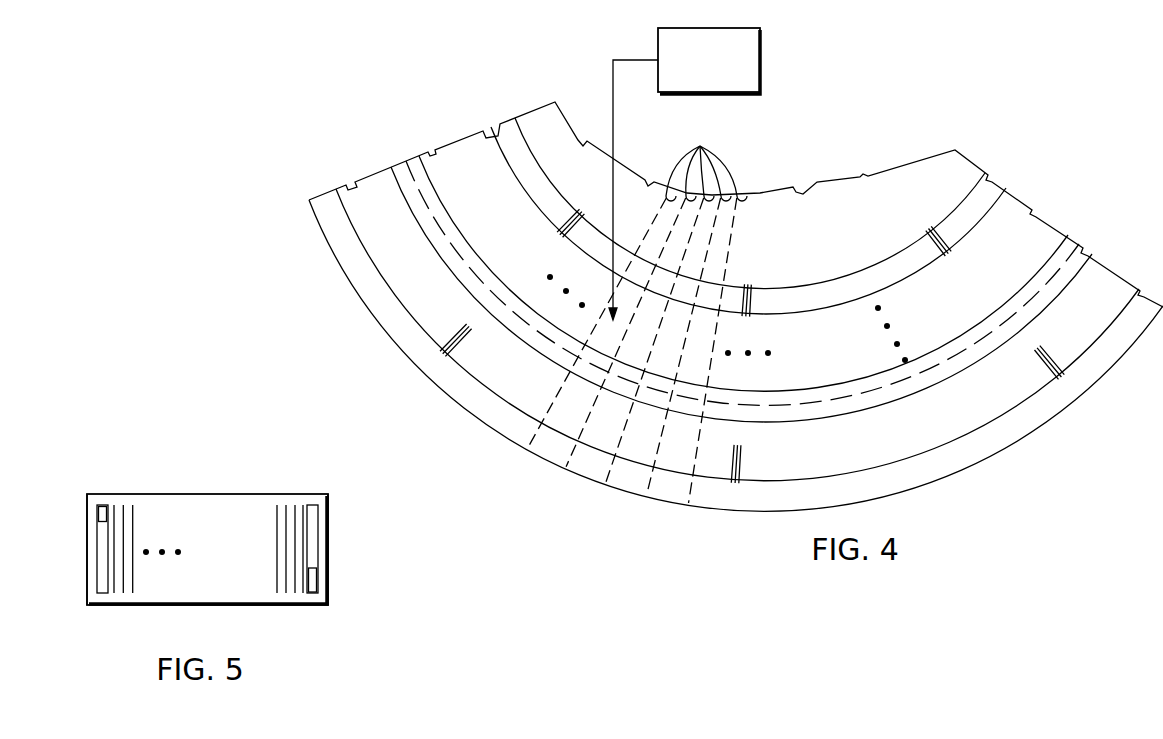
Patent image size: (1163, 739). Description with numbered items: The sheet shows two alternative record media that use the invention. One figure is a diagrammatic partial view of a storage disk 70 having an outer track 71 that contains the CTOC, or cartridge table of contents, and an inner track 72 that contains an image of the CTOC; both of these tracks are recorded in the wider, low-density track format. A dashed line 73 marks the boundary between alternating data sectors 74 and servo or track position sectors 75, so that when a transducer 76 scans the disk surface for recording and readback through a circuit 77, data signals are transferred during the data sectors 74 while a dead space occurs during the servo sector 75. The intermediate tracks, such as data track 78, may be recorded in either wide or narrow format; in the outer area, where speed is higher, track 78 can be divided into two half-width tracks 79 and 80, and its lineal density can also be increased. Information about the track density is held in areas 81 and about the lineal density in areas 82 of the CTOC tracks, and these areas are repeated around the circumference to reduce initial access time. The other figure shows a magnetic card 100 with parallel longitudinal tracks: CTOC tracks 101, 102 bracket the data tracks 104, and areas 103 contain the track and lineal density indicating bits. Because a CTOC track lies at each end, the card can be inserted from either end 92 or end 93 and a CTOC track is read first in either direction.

In FIG. 4, the storage disk 70 is at (745, 508).
In FIG. 4, the outer track 71 is at (945, 446).
In FIG. 4, the inner track 72 is at (851, 296).
In FIG. 4, the dashed line 73 is at (706, 158).
In FIG. 4, the data sectors 74 is at (548, 452).
In FIG. 4, the servo or track position sector 75 is at (587, 472).
In FIG. 4, the transducer 76 is at (610, 314).
In FIG. 4, the circuit 77 is at (760, 53).
In FIG. 4, the track 78 is at (843, 384).
In FIG. 4, the half width track 79 is at (959, 347).
In FIG. 4, the half width track 80 is at (1002, 340).
In FIG. 4, the areas 81 is at (578, 216).
In FIG. 4, the areas 82 is at (576, 234).
In FIG. 5, the magnetic card 100 is at (185, 494).
In FIG. 5, the end 93 is at (84, 506).
In FIG. 5, the end 92 is at (330, 510).
In FIG. 5, the CTOC track 101 is at (315, 588).
In FIG. 5, the CTOC track 102 is at (102, 588).
In FIG. 5, the areas 103 is at (100, 520).
In FIG. 5, the data tracks 104 is at (277, 513).